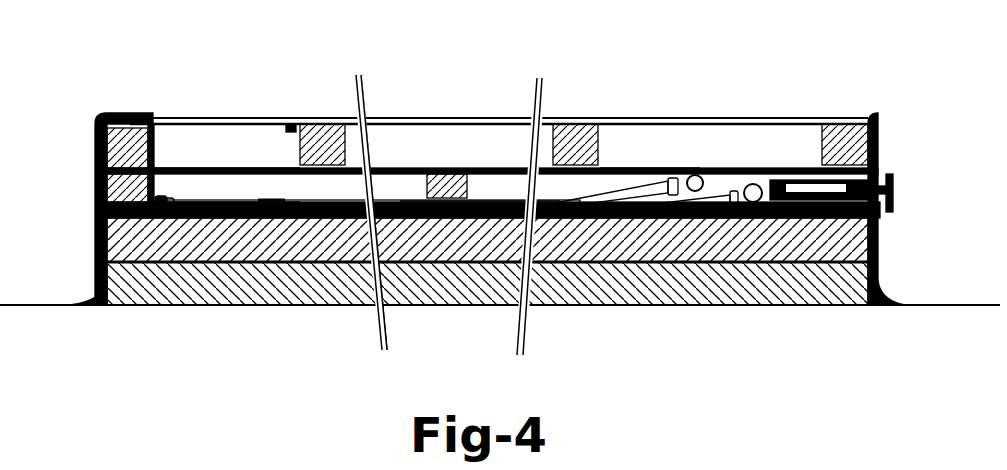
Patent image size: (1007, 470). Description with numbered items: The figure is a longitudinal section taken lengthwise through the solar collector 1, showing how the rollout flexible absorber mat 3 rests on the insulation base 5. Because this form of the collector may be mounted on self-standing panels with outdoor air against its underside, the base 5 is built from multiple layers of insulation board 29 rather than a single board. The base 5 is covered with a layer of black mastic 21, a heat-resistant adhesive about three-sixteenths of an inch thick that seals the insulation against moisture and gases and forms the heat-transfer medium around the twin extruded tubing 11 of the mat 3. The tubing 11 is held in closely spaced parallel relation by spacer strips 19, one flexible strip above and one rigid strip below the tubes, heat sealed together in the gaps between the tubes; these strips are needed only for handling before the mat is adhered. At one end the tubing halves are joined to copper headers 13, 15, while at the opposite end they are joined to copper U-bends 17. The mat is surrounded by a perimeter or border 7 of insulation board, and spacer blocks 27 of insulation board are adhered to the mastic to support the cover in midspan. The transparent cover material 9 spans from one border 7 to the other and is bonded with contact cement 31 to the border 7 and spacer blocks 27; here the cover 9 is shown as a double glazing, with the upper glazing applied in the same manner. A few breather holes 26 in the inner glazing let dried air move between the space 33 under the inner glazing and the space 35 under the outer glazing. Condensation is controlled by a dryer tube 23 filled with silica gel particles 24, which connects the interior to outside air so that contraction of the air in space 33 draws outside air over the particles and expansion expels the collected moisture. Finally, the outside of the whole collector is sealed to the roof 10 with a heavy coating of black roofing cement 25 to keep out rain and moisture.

The solar collector 1 is at (628, 310).
The rollout flexible absorber mat 3 is at (408, 200).
The insulation base 5 is at (745, 290).
The perimeter or border 7 is at (100, 205).
The cover material 9 is at (399, 196).
The roof 10 is at (918, 308).
The twin extruded tubing 11 is at (414, 192).
The copper header 13 is at (745, 182).
The copper header 15 is at (688, 176).
The copper U-bend 17 is at (160, 215).
The spacer strip 19 is at (268, 198).
The black mastic 21 is at (157, 172).
The dryer tube 23 is at (773, 180).
The silica gel particles 24 is at (797, 180).
The black roofing cement 25 is at (95, 132).
The breather hole 26 is at (637, 164).
The spacer block 27 is at (332, 125).
The insulation board 29 is at (292, 288).
The contact cement 31 is at (292, 128).
The space 33 is at (225, 190).
The space 35 is at (205, 140).